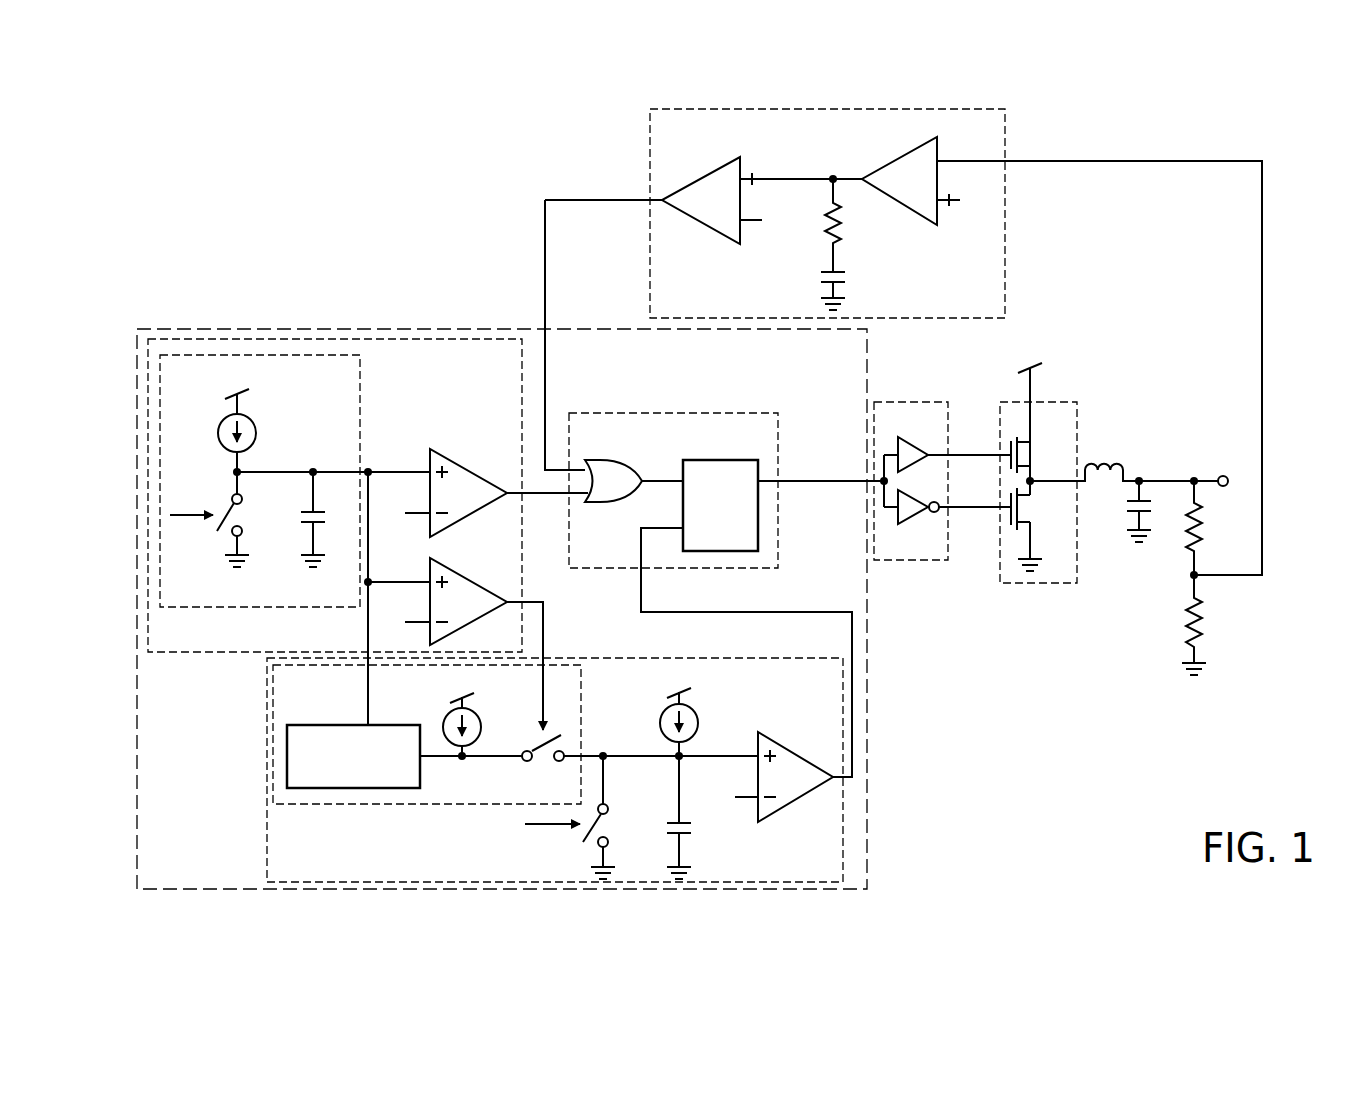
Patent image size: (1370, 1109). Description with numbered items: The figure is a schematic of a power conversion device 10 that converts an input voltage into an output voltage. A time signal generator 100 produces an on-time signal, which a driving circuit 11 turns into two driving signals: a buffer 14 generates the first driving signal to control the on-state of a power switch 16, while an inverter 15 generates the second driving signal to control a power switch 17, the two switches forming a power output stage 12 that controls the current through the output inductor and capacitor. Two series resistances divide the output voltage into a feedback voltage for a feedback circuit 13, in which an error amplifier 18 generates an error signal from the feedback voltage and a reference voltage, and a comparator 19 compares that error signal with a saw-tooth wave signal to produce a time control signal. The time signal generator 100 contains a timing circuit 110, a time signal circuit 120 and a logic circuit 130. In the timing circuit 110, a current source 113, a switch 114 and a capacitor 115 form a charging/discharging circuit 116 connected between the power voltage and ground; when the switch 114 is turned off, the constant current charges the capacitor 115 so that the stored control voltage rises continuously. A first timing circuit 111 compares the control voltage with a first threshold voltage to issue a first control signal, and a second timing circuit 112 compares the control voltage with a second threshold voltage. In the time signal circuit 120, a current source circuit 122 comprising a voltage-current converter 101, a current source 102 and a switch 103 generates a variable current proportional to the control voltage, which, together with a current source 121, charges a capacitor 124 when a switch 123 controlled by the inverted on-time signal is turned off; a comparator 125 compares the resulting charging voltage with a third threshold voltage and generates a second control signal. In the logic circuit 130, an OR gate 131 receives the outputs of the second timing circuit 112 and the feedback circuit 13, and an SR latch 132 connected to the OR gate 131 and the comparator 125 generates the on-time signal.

The power conversion device 10 is at (1018, 873).
The time signal generator 100 is at (240, 329).
The timing circuit 110 is at (240, 652).
The charging/discharging circuit 116 is at (360, 381).
The current source 113 is at (256, 430).
The switch 114 is at (224, 519).
The capacitor 115 is at (322, 517).
The second timing circuit 112 is at (466, 468).
The first timing circuit 111 is at (466, 578).
The logic circuit 130 is at (720, 568).
The OR gate 131 is at (632, 466).
The SR latch 132 is at (720, 460).
The time signal circuit 120 is at (267, 828).
The current source circuit 122 is at (410, 804).
The voltage-current converter 101 is at (385, 725).
The current source 102 is at (483, 720).
The switch 103 is at (640, 762).
The current source 121 is at (662, 718).
The switch 123 is at (582, 817).
The capacitor 124 is at (696, 817).
The comparator 125 is at (800, 748).
The feedback circuit 13 is at (650, 255).
The error amplifier 18 is at (897, 157).
The comparator 19 is at (700, 175).
The driving circuit 11 is at (930, 560).
The buffer 14 is at (912, 446).
The inverter 15 is at (912, 526).
The power output stage 12 is at (1052, 583).
The power switch 16 is at (1033, 459).
The power switch 17 is at (1033, 526).